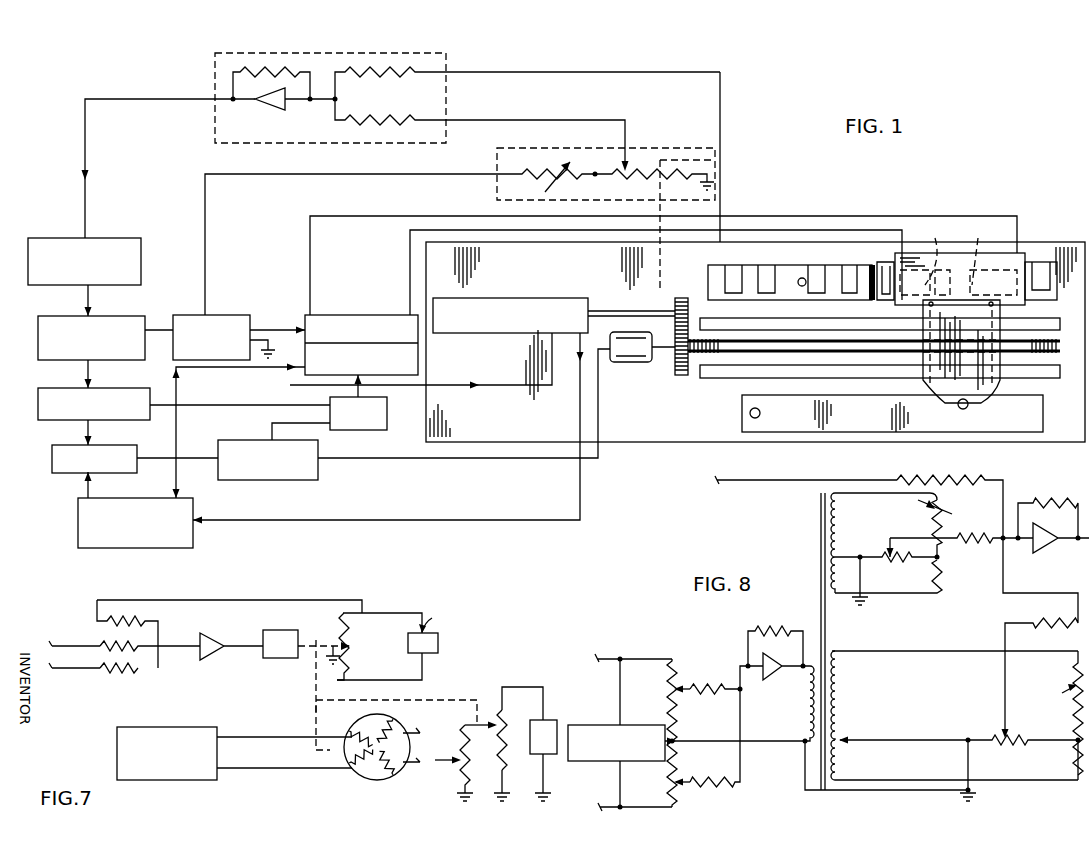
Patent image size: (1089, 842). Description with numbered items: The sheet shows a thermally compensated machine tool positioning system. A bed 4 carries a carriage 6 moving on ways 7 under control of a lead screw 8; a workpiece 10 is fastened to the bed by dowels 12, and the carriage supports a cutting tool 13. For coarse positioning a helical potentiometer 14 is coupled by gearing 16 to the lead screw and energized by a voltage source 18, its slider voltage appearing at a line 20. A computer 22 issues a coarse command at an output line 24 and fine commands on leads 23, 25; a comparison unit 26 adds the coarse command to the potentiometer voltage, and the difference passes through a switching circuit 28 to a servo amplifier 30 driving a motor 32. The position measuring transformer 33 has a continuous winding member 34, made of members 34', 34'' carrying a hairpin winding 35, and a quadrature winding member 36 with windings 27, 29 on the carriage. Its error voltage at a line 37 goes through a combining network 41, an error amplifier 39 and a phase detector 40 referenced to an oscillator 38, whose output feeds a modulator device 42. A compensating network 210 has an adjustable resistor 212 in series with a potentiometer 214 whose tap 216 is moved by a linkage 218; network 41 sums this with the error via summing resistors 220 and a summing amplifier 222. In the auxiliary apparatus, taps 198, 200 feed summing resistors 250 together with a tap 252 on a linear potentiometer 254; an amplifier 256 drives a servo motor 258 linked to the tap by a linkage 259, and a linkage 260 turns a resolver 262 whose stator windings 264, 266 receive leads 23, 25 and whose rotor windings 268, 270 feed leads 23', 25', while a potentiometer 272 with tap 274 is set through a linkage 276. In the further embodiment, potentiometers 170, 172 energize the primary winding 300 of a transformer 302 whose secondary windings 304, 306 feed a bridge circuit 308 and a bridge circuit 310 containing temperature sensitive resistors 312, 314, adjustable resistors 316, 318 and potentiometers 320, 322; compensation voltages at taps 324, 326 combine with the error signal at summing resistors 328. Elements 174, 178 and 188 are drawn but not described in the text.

In FIG. 1, the bed 4 is at (668, 442).
In FIG. 1, the carriage 6 is at (968, 406).
In FIG. 1, the ways 7 is at (1055, 318).
In FIG. 1, the lead screw 8 is at (776, 330).
In FIG. 1, the workpiece 10 is at (866, 421).
In FIG. 1, the dowels 12 is at (757, 418).
In FIG. 1, the cutting tool 13 is at (958, 408).
In FIG. 1, the helical potentiometer 14 is at (492, 298).
In FIG. 7, the helical potentiometer 14 is at (455, 778).
In FIG. 1, the gearing 16 is at (680, 298).
In FIG. 1, the voltage source 18 is at (360, 430).
In FIG. 1, the line 20 is at (538, 522).
In FIG. 7, the line 20 is at (446, 758).
In FIG. 1, the computer 22 is at (305, 313).
In FIG. 7, the computer 22 is at (147, 780).
In FIG. 1, the lead 23 is at (663, 265).
In FIG. 7, the lead 23 is at (281, 723).
In FIG. 1, the output line 24 is at (176, 428).
In FIG. 1, the lead 25 is at (638, 272).
In FIG. 7, the lead 25 is at (281, 756).
In FIG. 1, the comparison unit 26 is at (78, 520).
In FIG. 1, the winding 27 is at (935, 252).
In FIG. 1, the switching circuit 28 is at (52, 458).
In FIG. 1, the winding 29 is at (983, 252).
In FIG. 1, the servo amplifier 30 is at (275, 480).
In FIG. 1, the motor 32 is at (634, 362).
In FIG. 1, the position measuring transformer 33 is at (742, 266).
In FIG. 1, the continuous winding member 34 is at (791, 291).
In FIG. 1, the member 34' is at (824, 265).
In FIG. 1, the member 34'' is at (880, 268).
In FIG. 1, the hairpin winding 35 is at (840, 300).
In FIG. 1, the quadrature winding member 36 is at (1022, 253).
In FIG. 1, the line 37 is at (721, 136).
In FIG. 8, the line 37 is at (718, 484).
In FIG. 1, the oscillator 38 is at (221, 315).
In FIG. 7, the oscillator 38 is at (438, 645).
In FIG. 8, the oscillator 38 is at (625, 725).
In FIG. 1, the error amplifier 39 is at (141, 253).
In FIG. 1, the phase detector 40 is at (38, 342).
In FIG. 1, the combining network 41 is at (425, 53).
In FIG. 1, the modulator device 42 is at (38, 400).
In FIG. 8, the potentiometer 170 is at (678, 682).
In FIG. 8, the potentiometer 172 is at (676, 755).
In FIG. 8, the resistor 174 is at (686, 700).
In FIG. 8, the resistor 178 is at (690, 792).
In FIG. 7, the 60 cycle source 188 is at (552, 780).
In FIG. 8, the 60 cycle source 188 is at (617, 732).
In FIG. 7, the tap 198 is at (74, 668).
In FIG. 7, the tap 200 is at (82, 634).
In FIG. 1, the compensating network 210 is at (560, 148).
In FIG. 1, the adjustable resistor 212 is at (574, 180).
In FIG. 1, the potentiometer 214 is at (663, 172).
In FIG. 1, the tap 216 is at (634, 145).
In FIG. 1, the linkage 218 is at (662, 262).
In FIG. 1, the summing resistors 220 is at (380, 74).
In FIG. 1, the summing amplifier 222 is at (268, 112).
In FIG. 7, the summing resistors 250 is at (112, 618).
In FIG. 7, the tap 252 is at (352, 640).
In FIG. 7, the linear potentiometer 254 is at (340, 680).
In FIG. 7, the amplifier 256 is at (208, 632).
In FIG. 7, the servo motor 258 is at (285, 658).
In FIG. 7, the linkage 259 is at (316, 640).
In FIG. 7, the linkage 260 is at (316, 711).
In FIG. 7, the resolver 262 is at (352, 772).
In FIG. 7, the stator winding 264 is at (352, 728).
In FIG. 7, the stator winding 266 is at (350, 760).
In FIG. 7, the rotor winding 268 is at (392, 722).
In FIG. 7, the rotor winding 270 is at (378, 780).
In FIG. 7, the potentiometer 272 is at (507, 770).
In FIG. 7, the tap 274 is at (492, 698).
In FIG. 7, the linkage 276 is at (430, 698).
In FIG. 7, the lead 23' is at (425, 719).
In FIG. 7, the lead 25' is at (416, 774).
In FIG. 8, the primary winding 300 is at (810, 698).
In FIG. 8, the transformer 302 is at (822, 744).
In FIG. 8, the secondary winding 304 is at (840, 682).
In FIG. 8, the secondary winding 306 is at (838, 522).
In FIG. 8, the bridge circuit 308 is at (1057, 660).
In FIG. 8, the bridge circuit 310 is at (833, 498).
In FIG. 8, the temperature sensitive resistor 312 is at (1076, 760).
In FIG. 8, the temperature sensitive resistor 314 is at (940, 568).
In FIG. 8, the adjustable resistor 316 is at (1075, 703).
In FIG. 8, the adjustable resistor 318 is at (917, 525).
In FIG. 8, the potentiometer 320 is at (990, 738).
In FIG. 8, the potentiometer 322 is at (888, 556).
In FIG. 8, the tap 324 is at (1006, 722).
In FIG. 8, the tap 326 is at (892, 538).
In FIG. 8, the summing resistors 328 is at (948, 482).